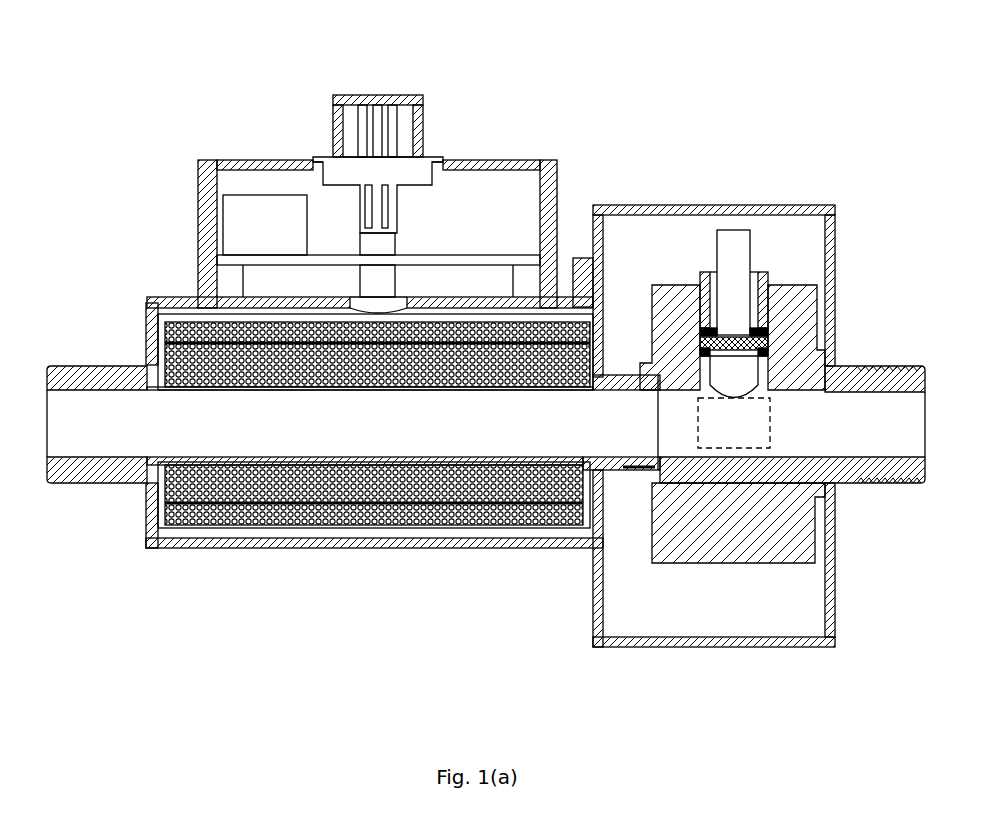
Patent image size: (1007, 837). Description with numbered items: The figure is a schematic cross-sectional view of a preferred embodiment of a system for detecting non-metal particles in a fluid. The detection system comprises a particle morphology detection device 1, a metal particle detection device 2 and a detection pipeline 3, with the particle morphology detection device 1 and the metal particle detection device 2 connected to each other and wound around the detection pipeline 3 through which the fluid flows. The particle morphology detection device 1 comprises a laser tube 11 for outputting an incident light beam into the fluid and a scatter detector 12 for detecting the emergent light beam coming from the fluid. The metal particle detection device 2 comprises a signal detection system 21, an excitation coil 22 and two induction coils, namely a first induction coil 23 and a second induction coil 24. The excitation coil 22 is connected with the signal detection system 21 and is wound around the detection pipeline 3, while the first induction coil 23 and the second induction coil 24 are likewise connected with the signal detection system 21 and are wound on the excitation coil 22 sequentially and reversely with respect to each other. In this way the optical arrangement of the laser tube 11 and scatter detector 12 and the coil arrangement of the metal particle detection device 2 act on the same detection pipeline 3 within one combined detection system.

The particle morphology detection device 1 is at (665, 199).
The metal particle detection device 2 is at (178, 168).
The detection pipeline 3 is at (93, 412).
The laser tube 11 is at (728, 263).
The scatter detector 12 is at (768, 420).
The signal detection system 21 is at (462, 197).
The excitation coil 22 is at (384, 480).
The first induction coil 23 is at (175, 512).
The second induction coil 24 is at (516, 518).